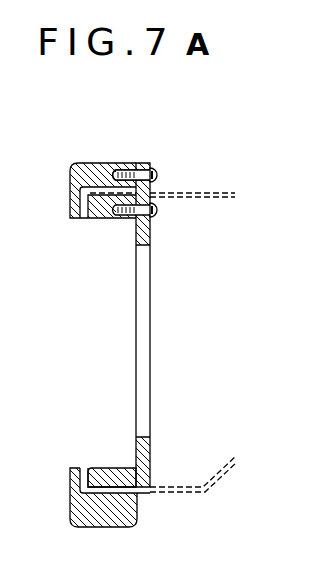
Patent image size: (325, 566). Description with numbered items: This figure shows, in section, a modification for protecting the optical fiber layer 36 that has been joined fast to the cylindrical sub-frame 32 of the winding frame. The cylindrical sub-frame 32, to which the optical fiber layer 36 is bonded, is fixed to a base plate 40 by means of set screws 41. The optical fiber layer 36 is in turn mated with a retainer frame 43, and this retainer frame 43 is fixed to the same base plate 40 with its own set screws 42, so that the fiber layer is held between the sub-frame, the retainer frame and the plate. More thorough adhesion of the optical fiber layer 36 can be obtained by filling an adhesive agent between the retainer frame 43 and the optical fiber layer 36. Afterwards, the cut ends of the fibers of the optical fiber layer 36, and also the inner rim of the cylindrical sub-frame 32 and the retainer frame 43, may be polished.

The cylindrical sub-frame 32 is at (110, 467).
The optical fiber layer 36 is at (176, 190).
The base plate 40 is at (157, 233).
The set screws 41 is at (160, 214).
The set screws 42 is at (152, 164).
The retainer frame 43 is at (88, 160).